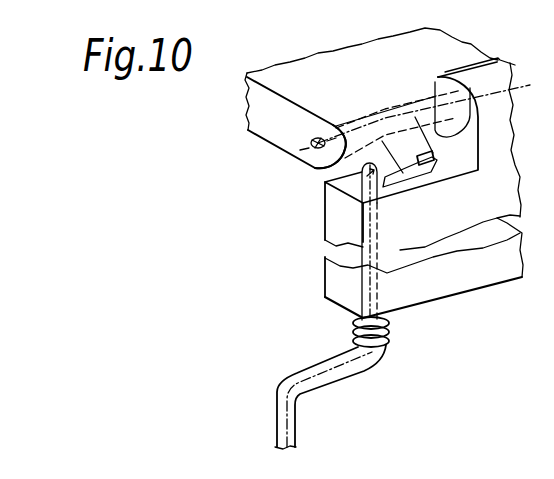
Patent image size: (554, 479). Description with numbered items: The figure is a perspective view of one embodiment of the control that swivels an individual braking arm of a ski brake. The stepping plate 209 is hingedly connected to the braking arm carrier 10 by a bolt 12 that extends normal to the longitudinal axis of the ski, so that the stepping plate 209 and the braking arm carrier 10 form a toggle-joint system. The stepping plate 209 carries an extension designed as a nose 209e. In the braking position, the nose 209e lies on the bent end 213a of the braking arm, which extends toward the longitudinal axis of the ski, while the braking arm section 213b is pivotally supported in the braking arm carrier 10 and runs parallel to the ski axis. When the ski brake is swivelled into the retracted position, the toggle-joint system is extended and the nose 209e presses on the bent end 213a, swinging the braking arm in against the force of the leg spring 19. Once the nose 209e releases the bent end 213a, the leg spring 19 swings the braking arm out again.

The stepping plate 209 is at (248, 118).
The bolt 12 is at (330, 152).
The nose 209e is at (325, 175).
The bent end 213a is at (338, 196).
The braking arm section 213b is at (325, 249).
The braking arm carrier 10 is at (325, 297).
The leg spring 19 is at (355, 344).